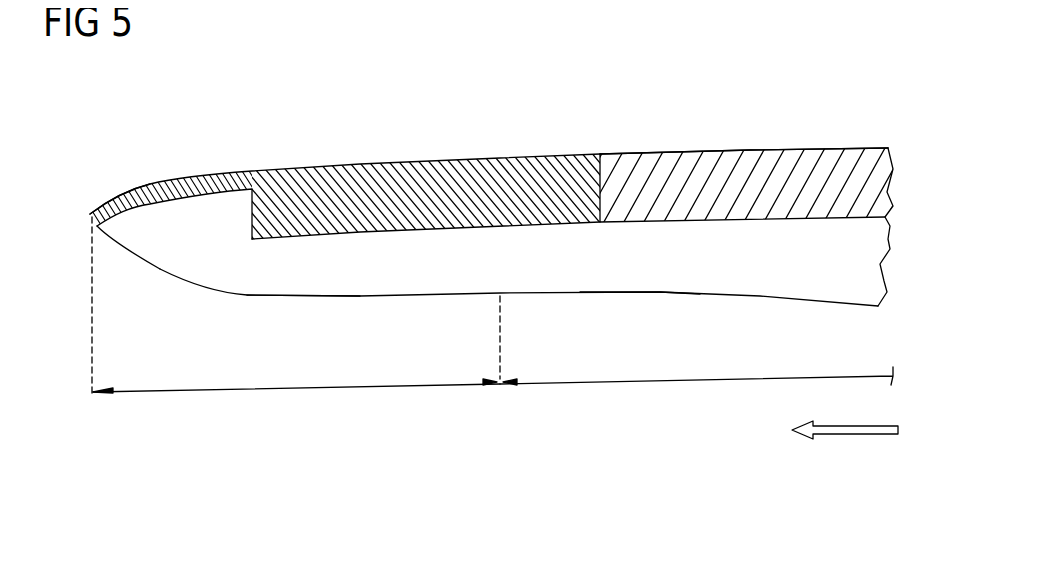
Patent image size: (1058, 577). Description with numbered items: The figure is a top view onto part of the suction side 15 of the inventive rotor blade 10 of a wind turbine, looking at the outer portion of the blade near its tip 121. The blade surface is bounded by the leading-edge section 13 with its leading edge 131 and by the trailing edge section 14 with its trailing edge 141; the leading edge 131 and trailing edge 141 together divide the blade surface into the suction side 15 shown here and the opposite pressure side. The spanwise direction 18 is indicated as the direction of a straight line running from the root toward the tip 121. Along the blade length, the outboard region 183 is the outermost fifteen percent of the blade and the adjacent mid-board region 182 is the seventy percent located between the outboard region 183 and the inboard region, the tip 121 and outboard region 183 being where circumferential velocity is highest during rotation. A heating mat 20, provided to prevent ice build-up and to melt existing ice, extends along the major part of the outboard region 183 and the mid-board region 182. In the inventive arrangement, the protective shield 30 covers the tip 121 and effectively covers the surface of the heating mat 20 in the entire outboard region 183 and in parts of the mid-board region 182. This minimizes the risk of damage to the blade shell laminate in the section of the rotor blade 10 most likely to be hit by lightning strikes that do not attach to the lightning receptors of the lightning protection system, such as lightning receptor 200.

The rotor blade 10 is at (305, 58).
The tip 121 is at (90, 215).
The leading-edge section 13 is at (697, 159).
The leading edge 131 is at (858, 148).
The trailing edge section 14 is at (555, 280).
The trailing edge 141 is at (620, 295).
The suction side 15 is at (873, 240).
The spanwise direction 18 is at (853, 433).
The mid-board region 182 is at (685, 385).
The outboard region 183 is at (303, 393).
The heating mat 20 is at (805, 159).
The lightning receptor 200 is at (317, 262).
The protective shield 30 is at (411, 162).